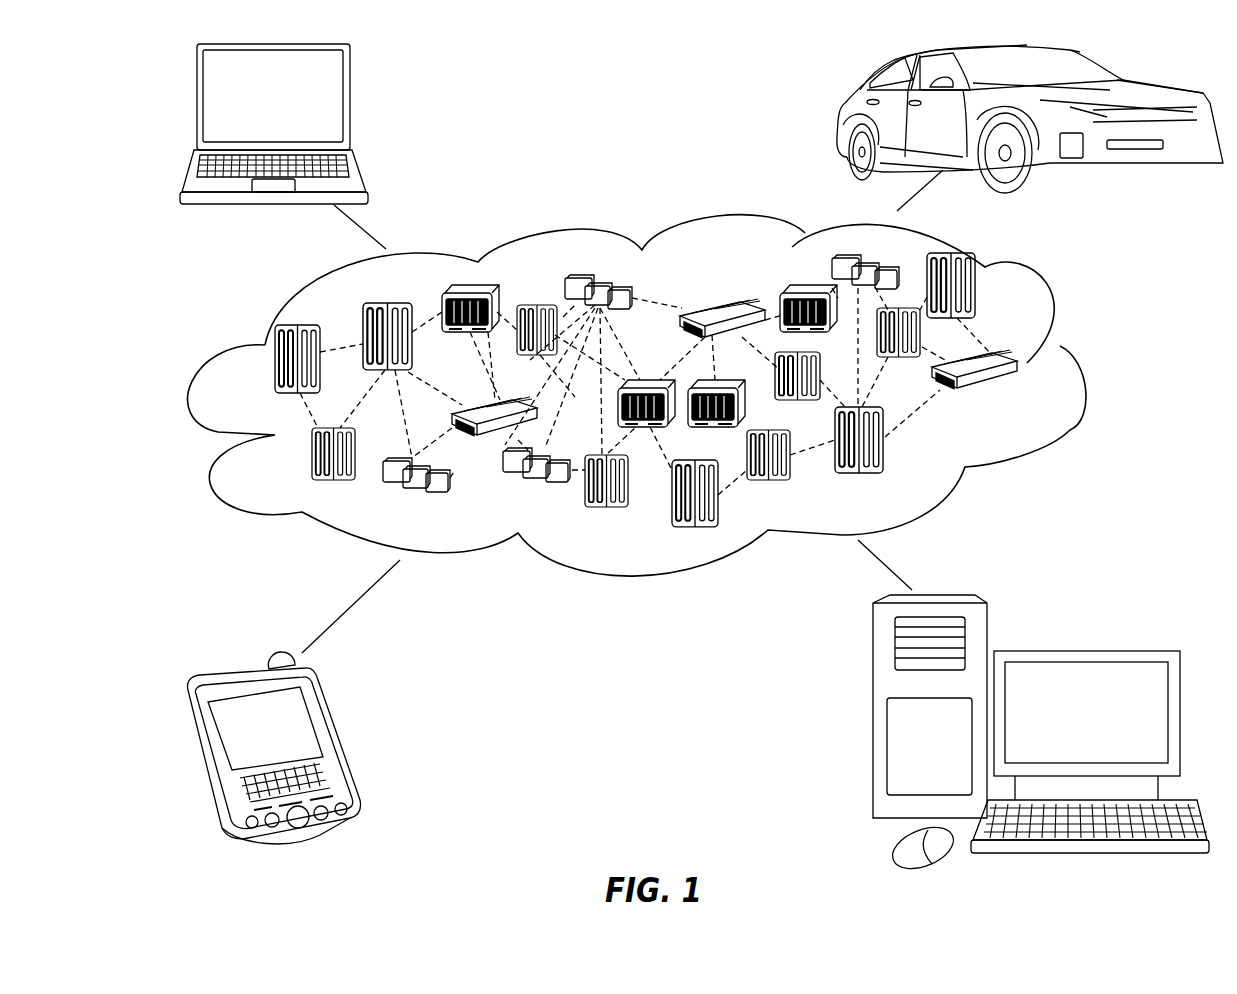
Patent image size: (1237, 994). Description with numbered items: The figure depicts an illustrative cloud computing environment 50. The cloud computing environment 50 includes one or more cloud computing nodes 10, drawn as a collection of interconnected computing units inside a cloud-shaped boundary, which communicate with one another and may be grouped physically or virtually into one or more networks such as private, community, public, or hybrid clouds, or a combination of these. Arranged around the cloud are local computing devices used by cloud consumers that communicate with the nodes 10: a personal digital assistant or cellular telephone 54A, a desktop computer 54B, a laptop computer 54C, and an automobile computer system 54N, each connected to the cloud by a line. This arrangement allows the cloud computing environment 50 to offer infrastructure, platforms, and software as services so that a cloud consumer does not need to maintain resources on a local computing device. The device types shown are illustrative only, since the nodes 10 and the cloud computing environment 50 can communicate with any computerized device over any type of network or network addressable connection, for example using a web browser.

The cloud computing nodes 10 is at (1020, 398).
The cloud computing environment 50 is at (1083, 371).
The personal digital assistant (PDA) or cellular telephone 54A is at (340, 744).
The desktop computer 54B is at (1088, 651).
The laptop computer 54C is at (352, 106).
The automobile computer system 54N is at (839, 120).